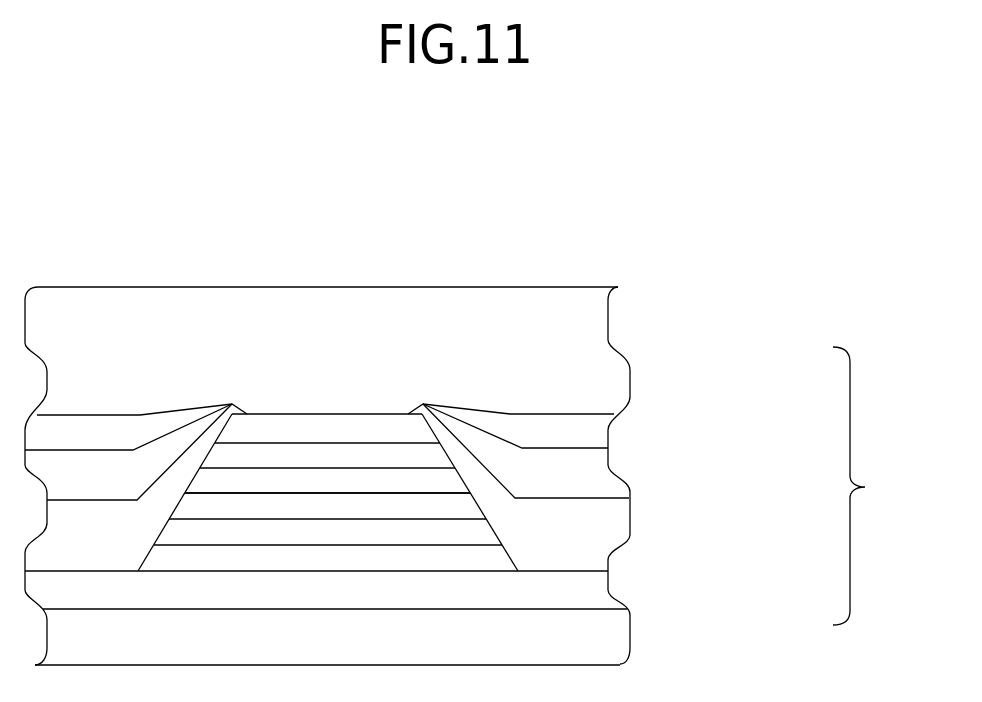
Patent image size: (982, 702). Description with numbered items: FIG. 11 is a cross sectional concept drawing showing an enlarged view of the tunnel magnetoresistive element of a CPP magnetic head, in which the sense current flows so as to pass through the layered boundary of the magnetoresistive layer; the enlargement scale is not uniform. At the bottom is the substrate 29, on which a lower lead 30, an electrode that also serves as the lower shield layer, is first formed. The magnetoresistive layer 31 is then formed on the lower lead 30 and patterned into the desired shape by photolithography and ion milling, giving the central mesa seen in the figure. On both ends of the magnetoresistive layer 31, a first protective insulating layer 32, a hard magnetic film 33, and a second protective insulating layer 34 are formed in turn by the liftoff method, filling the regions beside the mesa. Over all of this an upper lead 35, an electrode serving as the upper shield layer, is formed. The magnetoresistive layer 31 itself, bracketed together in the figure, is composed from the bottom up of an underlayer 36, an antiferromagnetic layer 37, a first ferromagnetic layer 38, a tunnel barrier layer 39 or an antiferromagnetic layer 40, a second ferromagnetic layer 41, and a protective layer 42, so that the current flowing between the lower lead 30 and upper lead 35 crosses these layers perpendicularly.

The substrate 29 is at (327, 647).
The lower lead 30 is at (335, 591).
The magnetoresistive layer 31 is at (872, 486).
The first protective insulating layer 32 is at (291, 492).
The hard magnetic film 33 is at (338, 452).
The second protective insulating layer 34 is at (316, 427).
The upper lead 35 is at (327, 351).
The underlayer 36 is at (497, 558).
The antiferromagnetic layer 37 is at (478, 532).
The first ferromagnetic layer 38 is at (455, 503).
The tunnel barrier layer 39 is at (445, 482).
The antiferromagnetic layer 40 is at (494, 473).
The second ferromagnetic layer 41 is at (428, 453).
The protective layer 42 is at (412, 427).